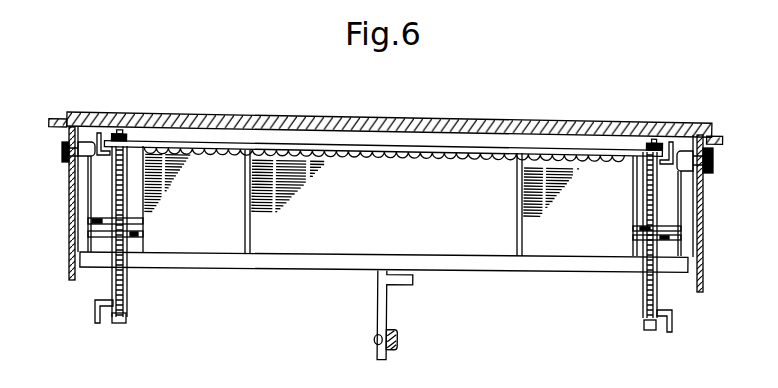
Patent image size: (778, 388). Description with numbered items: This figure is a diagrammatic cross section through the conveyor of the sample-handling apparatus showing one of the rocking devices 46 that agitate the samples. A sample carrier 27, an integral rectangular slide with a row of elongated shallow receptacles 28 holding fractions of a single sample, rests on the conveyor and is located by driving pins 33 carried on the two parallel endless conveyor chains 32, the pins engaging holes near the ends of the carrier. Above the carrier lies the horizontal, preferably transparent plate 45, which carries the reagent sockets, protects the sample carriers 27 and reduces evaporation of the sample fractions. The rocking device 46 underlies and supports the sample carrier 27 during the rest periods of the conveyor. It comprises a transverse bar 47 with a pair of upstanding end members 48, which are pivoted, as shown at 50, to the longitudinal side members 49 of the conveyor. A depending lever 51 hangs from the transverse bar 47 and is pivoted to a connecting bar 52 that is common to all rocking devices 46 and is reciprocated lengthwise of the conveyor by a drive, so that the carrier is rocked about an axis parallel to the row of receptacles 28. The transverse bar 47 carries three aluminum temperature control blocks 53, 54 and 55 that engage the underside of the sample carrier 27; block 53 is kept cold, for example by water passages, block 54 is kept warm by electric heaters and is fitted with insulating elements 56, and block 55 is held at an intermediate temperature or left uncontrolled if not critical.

The sample carrier 27 is at (498, 140).
The receptacle 28 is at (425, 155).
The conveyor chain 32 is at (127, 280).
The driving pin 33 is at (120, 129).
The plate 45 is at (410, 119).
The rocking device 46 is at (330, 318).
The transverse bar 47 is at (428, 264).
The end member 48 is at (78, 197).
The longitudinal side member 49 is at (68, 260).
The pivot 50 is at (62, 152).
The depending lever 51 is at (379, 312).
The connecting bar 52 is at (399, 350).
The temperature control block 53 is at (217, 235).
The temperature control block 54 is at (290, 242).
The temperature control block 55 is at (537, 247).
The insulating element 56 is at (262, 244).